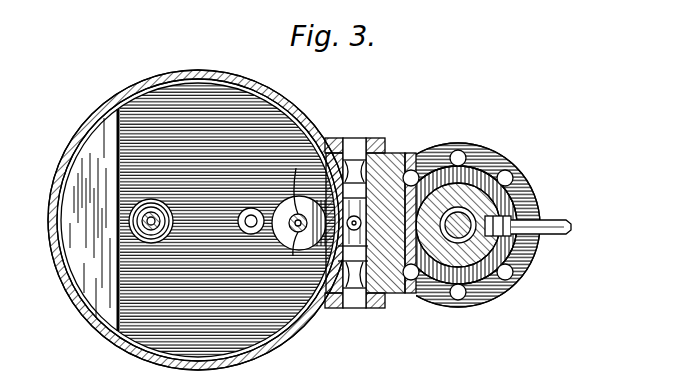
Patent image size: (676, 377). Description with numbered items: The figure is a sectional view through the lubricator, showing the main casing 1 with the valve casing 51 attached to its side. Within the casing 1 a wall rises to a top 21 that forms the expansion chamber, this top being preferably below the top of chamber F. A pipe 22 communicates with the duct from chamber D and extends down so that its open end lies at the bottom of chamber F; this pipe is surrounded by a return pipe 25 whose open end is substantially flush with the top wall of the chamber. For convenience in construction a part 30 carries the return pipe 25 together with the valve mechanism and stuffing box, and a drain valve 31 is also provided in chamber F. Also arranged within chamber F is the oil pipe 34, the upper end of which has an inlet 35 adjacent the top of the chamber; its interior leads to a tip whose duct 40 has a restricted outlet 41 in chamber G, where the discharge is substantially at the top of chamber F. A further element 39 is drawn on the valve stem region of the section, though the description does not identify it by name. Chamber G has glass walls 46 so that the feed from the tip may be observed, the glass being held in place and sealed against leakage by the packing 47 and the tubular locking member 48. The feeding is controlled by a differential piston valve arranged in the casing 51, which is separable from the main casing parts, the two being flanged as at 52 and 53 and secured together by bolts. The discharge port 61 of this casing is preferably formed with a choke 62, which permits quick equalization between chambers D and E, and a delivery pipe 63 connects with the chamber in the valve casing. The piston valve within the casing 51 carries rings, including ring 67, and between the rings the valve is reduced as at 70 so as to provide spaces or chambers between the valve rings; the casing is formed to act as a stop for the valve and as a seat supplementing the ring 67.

The casing 1 is at (47, 242).
The top of wall 21 is at (82, 255).
The pipe 22 is at (158, 196).
The return pipe 25 is at (163, 208).
The part 30 is at (148, 228).
The drain valve 31 is at (237, 230).
The oil pipe 34 is at (283, 240).
The inlet 35 is at (287, 168).
The valve pin 39 is at (356, 236).
The duct 40 is at (292, 146).
The restricted outlet 41 is at (286, 247).
The glass walls 46 is at (293, 280).
The packing 47 is at (366, 158).
The tubular locking member 48 is at (371, 129).
The casing 51 is at (488, 157).
The flange 52 is at (386, 289).
The flange 53 is at (407, 147).
The discharge port 61 is at (525, 183).
The choke 62 is at (530, 240).
The delivery pipe 63 is at (549, 212).
The ring 67 is at (462, 243).
The reduced portion 70 is at (445, 236).